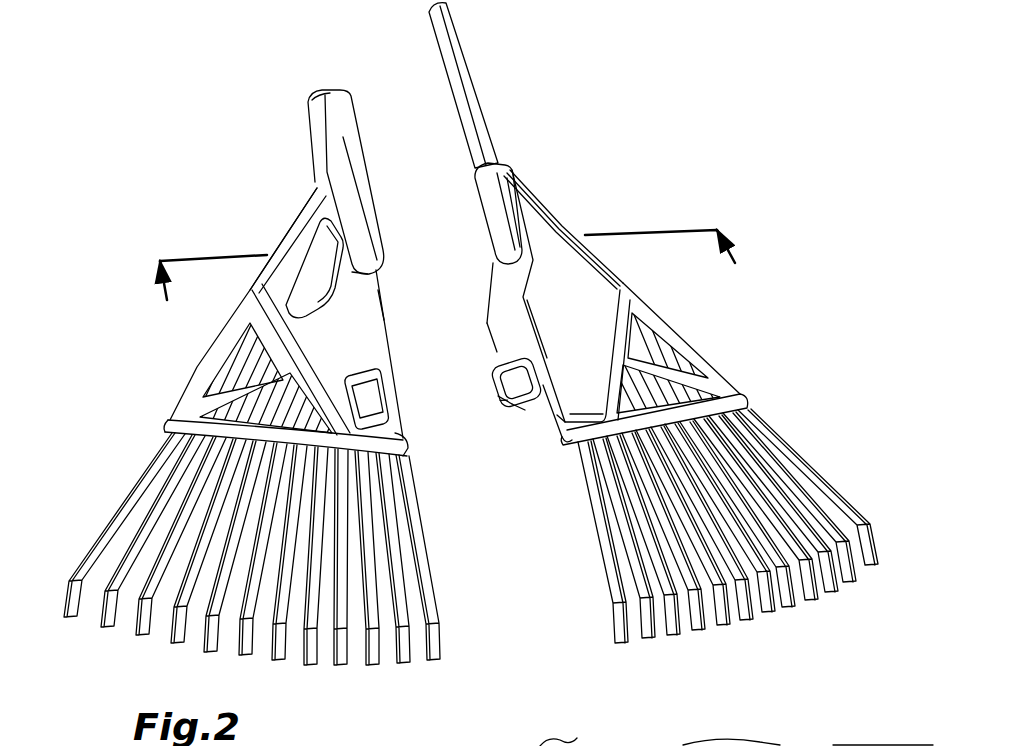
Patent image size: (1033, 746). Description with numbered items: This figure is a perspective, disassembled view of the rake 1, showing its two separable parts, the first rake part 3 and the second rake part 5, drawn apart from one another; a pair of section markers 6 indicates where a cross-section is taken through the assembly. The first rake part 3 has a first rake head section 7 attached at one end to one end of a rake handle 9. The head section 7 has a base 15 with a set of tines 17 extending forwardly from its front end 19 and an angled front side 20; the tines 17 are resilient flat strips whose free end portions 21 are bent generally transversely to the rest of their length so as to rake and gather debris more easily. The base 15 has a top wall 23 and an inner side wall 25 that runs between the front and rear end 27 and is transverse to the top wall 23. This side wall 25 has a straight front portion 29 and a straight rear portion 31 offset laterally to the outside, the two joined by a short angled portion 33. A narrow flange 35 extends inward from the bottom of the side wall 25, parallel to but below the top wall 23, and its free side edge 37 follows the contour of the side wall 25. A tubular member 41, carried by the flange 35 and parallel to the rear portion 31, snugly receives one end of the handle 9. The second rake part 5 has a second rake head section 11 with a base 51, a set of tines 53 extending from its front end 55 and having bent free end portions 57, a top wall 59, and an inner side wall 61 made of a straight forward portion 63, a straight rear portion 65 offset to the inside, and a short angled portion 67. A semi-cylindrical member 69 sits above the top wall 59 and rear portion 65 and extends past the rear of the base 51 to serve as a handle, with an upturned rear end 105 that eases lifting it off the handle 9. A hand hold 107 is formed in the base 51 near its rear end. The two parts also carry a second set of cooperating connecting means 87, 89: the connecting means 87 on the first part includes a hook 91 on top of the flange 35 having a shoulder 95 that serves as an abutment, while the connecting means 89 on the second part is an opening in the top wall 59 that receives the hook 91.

The rake 1 is at (122, 45).
The first rake part 3 is at (570, 185).
The second rake part 5 is at (178, 372).
The section line 6- 6 is at (451, 278).
The first rake head section 7 is at (742, 370).
The rake handle 9 is at (470, 55).
The second rake head section 11 is at (185, 410).
The base 15 is at (620, 283).
The set of tines 17 is at (730, 545).
The front end 19 is at (573, 432).
The angled front side 20 is at (615, 388).
The free end portions 21 is at (620, 627).
The top wall 23 is at (565, 329).
The inner side wall 25 is at (529, 313).
The rear end 27 is at (510, 173).
The straight front portion 29 is at (563, 423).
The straight rear portion 31 is at (600, 191).
The short angled portion 33 is at (527, 282).
The narrow flange 35 is at (507, 371).
The free side edge 37 is at (490, 337).
The tubular member 41 is at (480, 180).
The base 51 is at (300, 210).
The set of tines 53 is at (295, 565).
The front end 55 is at (393, 437).
The bent free end portions 57 is at (437, 640).
The top wall 59 is at (320, 332).
The inner side wall 61 is at (379, 315).
The straight forward portion 63 is at (385, 353).
The straight rear portion 65 is at (322, 157).
The short angled portion 67 is at (382, 278).
The semi-cylindrical member 69 is at (345, 158).
The connecting means 87 is at (515, 403).
The connecting means 89 is at (388, 410).
The hook 91 is at (523, 412).
The shoulder 95 is at (500, 380).
The upturned rear end 105 is at (330, 86).
The hand hold 107 is at (300, 260).